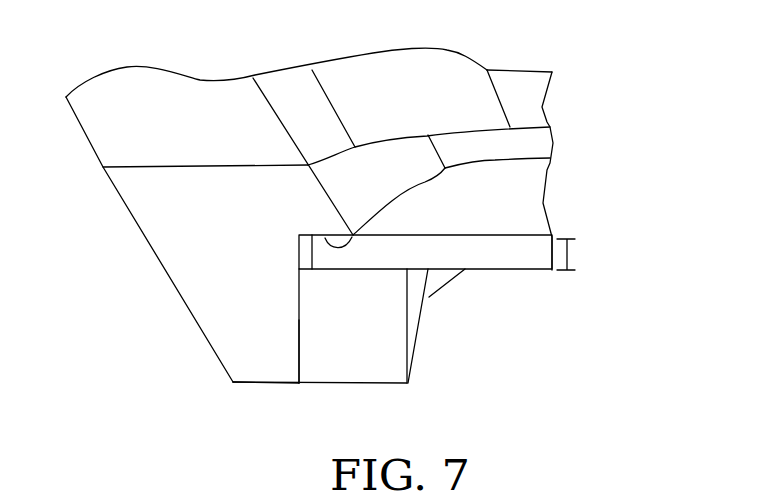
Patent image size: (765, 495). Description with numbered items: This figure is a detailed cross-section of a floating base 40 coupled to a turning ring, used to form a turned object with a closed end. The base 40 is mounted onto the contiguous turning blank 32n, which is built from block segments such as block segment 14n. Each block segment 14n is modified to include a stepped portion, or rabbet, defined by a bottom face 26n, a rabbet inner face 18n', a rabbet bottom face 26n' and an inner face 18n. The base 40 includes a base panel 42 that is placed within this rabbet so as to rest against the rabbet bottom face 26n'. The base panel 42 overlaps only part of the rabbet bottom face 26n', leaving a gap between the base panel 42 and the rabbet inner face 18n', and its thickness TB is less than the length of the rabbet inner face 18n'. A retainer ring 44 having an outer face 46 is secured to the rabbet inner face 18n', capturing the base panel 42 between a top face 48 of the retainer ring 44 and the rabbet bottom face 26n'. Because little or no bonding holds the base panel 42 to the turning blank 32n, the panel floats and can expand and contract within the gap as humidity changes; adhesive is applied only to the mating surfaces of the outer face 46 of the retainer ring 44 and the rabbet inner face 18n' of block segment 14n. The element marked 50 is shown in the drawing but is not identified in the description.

The first base 40 is at (630, 106).
The base panel 42 is at (498, 200).
The block segment 14n is at (218, 328).
The contiguous turning blank 32n is at (142, 257).
The inner face 18n is at (429, 95).
The rabbet bottom face 26n' is at (304, 218).
The braze layer 50 is at (296, 258).
The thickness TB is at (568, 253).
The top face 48 is at (358, 269).
The retainer ring 44 is at (388, 368).
The outer face 46 is at (299, 355).
The bottom face 26n is at (244, 412).
The rabbet inner face 18n' is at (330, 372).